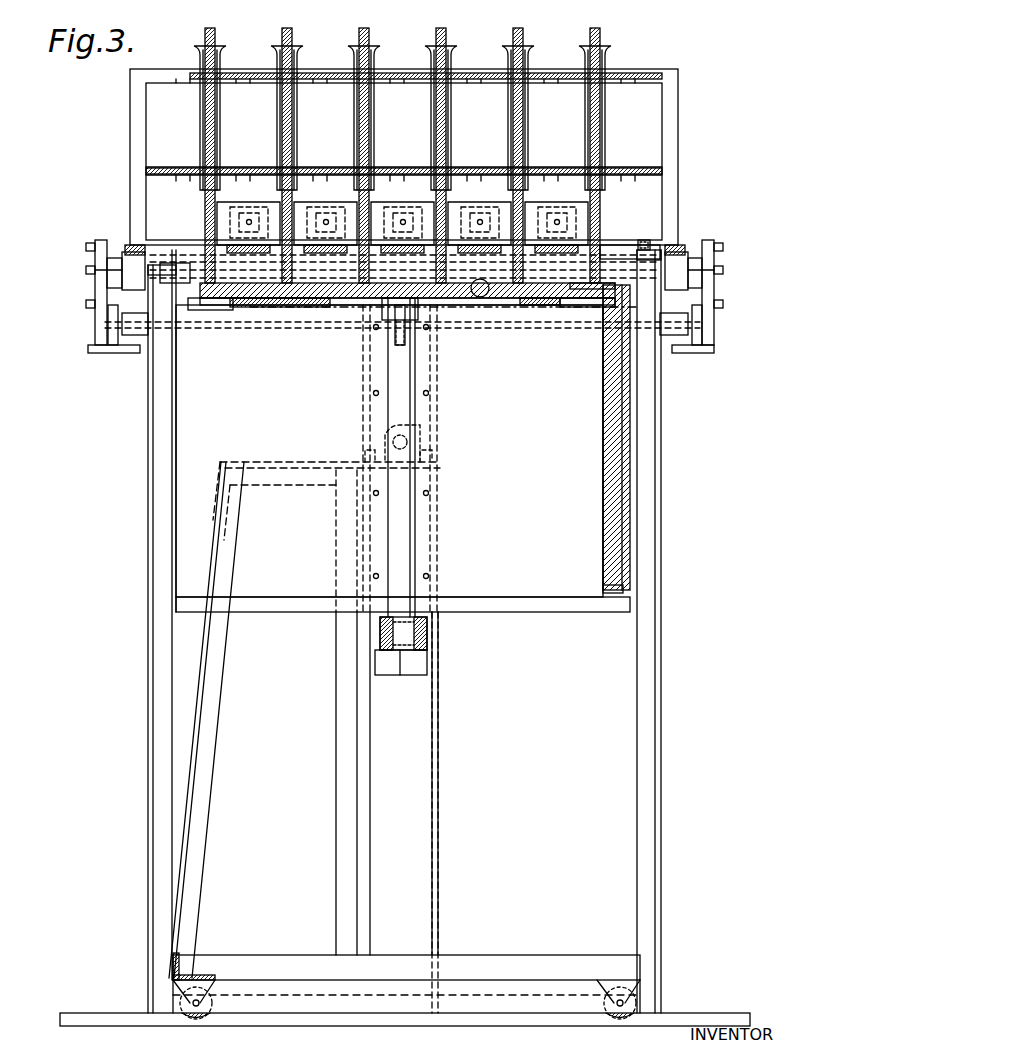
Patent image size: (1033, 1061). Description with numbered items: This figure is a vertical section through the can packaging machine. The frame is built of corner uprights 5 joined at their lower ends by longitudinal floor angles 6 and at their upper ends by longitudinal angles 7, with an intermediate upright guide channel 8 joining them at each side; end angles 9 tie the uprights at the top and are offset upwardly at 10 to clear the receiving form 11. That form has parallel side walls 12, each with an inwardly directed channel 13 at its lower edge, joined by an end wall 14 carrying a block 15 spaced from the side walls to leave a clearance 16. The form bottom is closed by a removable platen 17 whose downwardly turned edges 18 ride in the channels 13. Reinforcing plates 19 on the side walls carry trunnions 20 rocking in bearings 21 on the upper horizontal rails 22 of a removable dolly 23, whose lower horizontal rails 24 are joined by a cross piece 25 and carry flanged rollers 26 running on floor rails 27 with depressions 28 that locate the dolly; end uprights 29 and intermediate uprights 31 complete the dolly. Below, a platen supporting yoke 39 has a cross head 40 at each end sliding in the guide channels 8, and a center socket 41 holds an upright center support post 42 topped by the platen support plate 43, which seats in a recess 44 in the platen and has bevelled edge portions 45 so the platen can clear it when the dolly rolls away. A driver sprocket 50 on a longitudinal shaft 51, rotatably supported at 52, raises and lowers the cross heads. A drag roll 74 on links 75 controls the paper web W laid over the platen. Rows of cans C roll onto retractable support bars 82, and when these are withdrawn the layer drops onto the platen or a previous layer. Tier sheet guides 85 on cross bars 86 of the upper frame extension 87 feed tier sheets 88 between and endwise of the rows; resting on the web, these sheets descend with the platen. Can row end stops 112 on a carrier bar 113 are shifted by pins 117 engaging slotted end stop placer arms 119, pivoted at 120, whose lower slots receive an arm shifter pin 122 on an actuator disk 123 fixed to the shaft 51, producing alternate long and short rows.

The corner uprights 5 is at (148, 774).
The longitudinal floor angles 6 is at (490, 1003).
The longitudinal angles 7 is at (176, 300).
The intermediate upright guide channel 8 is at (444, 706).
The traversing or end angles 9 is at (115, 274).
The upward offset 10 is at (125, 248).
The can complement receiving form 11 is at (600, 464).
The side walls 12 is at (604, 502).
The ledge or U-shaped channel 13 is at (458, 598).
The end wall 14 is at (631, 532).
The block 15 is at (622, 560).
The clearance 16 is at (602, 589).
The removable platen 17 is at (565, 303).
The downwardly turned edges 18 is at (236, 305).
The reinforcing plates 19 is at (420, 430).
The trunnions 20 is at (420, 447).
The bearings 21 is at (405, 424).
The upper horizontal rails 22 is at (308, 483).
The removable dolly 23 is at (196, 708).
The lower horizontal rails 24 is at (476, 962).
The cross piece 25 is at (173, 970).
The flanged rollers 26 is at (180, 1002).
The floor rails 27 is at (274, 1024).
The depressions 28 is at (192, 1020).
The end uprights 29 is at (193, 738).
The intermediate uprights 31 is at (337, 924).
The platen supporting yoke 39 is at (418, 650).
The cross head 40 is at (378, 663).
The center socket 41 is at (381, 638).
The upright center support post 42 is at (416, 552).
The platen support plate 43 is at (385, 308).
The recess 44 is at (480, 298).
The bevelled edge portions 45 is at (535, 303).
The driver sprocket 50 is at (394, 342).
The longitudinal shaft 51 is at (316, 318).
The shaft support 52 is at (135, 336).
The drag roll 74 is at (606, 245).
The links 75 is at (640, 242).
The support bars 82 is at (230, 247).
The tier sheet guides 85 is at (200, 118).
The cross bars 86 is at (247, 170).
The upper frame extension 87 is at (146, 118).
The tier sheets 88 is at (282, 41).
The can row end stops 112 is at (226, 212).
The carrier bar 113 is at (100, 240).
The pin 117 is at (86, 247).
The end stop placer arm 119 is at (95, 313).
The pivot support 120 is at (86, 270).
The arm shifter pin 122 is at (108, 325).
The actuator disk 123 is at (118, 353).
The cans C is at (305, 198).
The web W is at (284, 300).